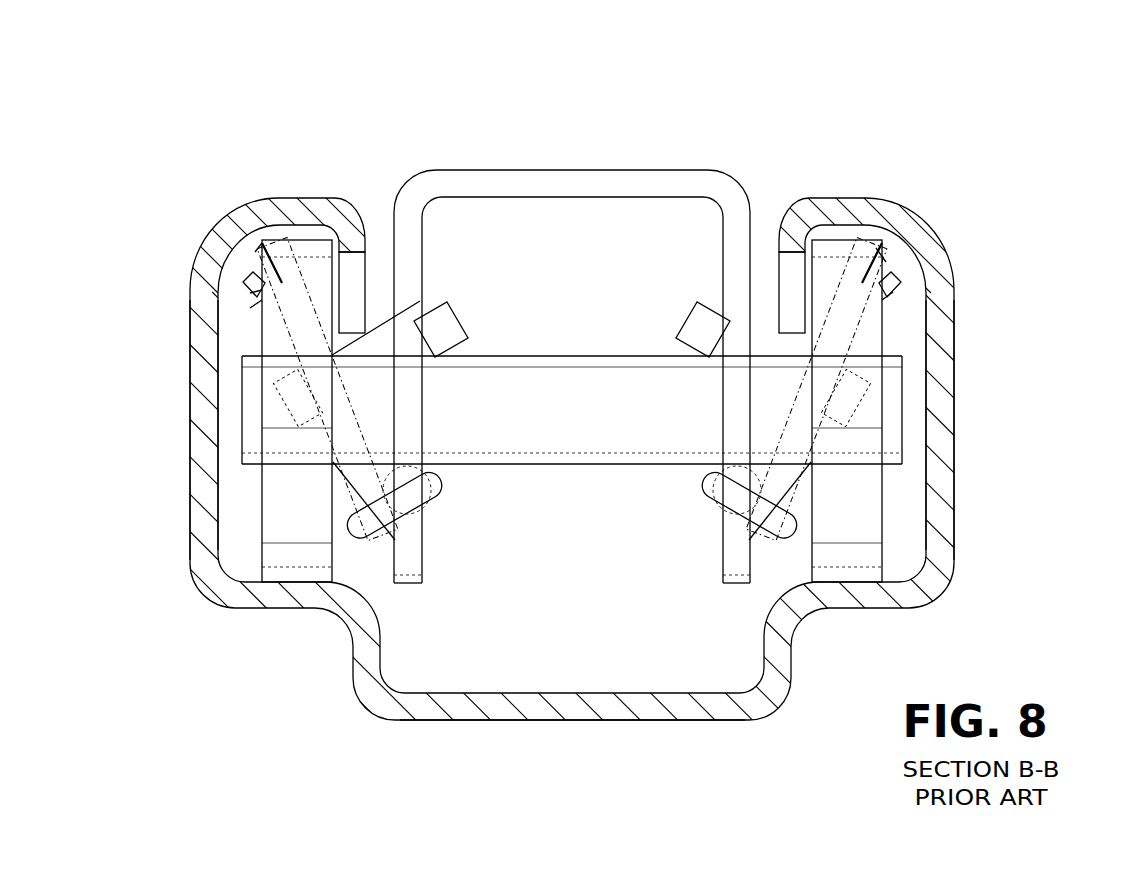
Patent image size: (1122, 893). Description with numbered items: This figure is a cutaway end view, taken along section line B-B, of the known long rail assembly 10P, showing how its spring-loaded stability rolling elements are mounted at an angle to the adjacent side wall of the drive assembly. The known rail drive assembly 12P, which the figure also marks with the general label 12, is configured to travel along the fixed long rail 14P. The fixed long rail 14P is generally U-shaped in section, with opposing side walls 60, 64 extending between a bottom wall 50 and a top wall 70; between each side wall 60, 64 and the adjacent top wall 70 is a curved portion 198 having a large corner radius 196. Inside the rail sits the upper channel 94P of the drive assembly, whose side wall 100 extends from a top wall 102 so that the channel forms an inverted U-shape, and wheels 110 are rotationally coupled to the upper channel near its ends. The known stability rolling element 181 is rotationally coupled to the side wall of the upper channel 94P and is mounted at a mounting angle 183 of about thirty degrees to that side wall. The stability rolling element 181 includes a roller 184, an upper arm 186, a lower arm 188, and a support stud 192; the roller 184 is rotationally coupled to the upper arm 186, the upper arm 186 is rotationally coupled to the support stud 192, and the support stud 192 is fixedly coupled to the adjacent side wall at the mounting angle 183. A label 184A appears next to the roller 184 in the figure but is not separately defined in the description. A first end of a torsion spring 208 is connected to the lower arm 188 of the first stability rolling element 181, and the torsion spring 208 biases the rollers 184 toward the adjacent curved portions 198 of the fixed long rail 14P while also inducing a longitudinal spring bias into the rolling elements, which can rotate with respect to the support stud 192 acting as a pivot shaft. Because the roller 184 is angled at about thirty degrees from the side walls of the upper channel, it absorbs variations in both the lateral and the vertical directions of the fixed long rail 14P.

The known long rail assembly 10P is at (561, 404).
The known rail drive assembly 12P is at (590, 308).
The fuse element 12 is at (383, 132).
The fixed long rail 14P is at (956, 578).
The bottom wall 50 is at (565, 693).
The side wall 60 is at (228, 425).
The side wall 64 is at (932, 400).
The top wall 70 is at (306, 197).
The upper channel 94P is at (585, 168).
The side wall 100 is at (572, 337).
The top wall 102 is at (535, 197).
The wheels 110 is at (256, 524).
The first stability rolling element 181 is at (241, 275).
The mounting angle 183 is at (340, 300).
The roller 184 is at (302, 322).
The insert tip 184A is at (886, 250).
The upper arm 186 is at (250, 308).
The lower arm 188 is at (352, 472).
The support stud 192 is at (463, 317).
The large corner radius 196 is at (250, 294).
The curved portion 198 is at (255, 252).
The torsion spring 208 is at (437, 490).